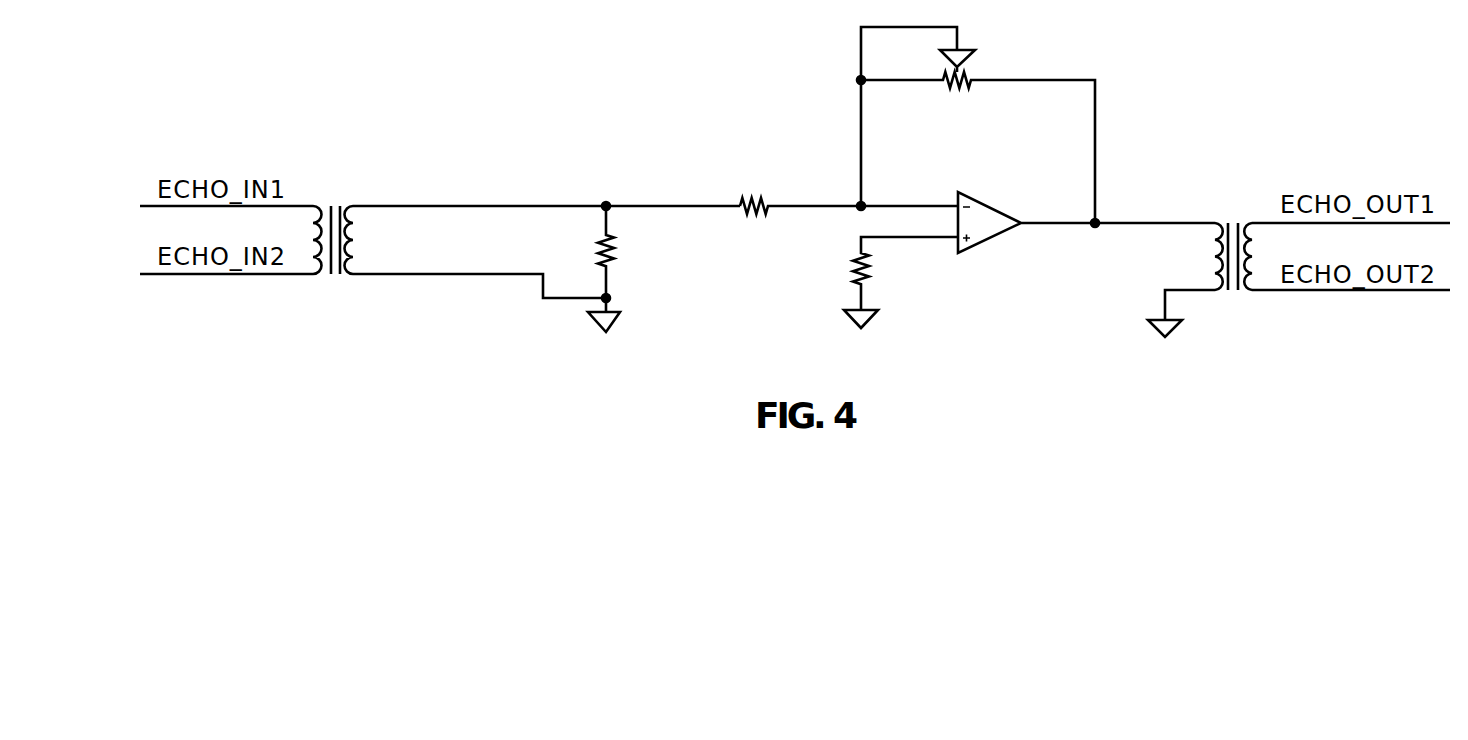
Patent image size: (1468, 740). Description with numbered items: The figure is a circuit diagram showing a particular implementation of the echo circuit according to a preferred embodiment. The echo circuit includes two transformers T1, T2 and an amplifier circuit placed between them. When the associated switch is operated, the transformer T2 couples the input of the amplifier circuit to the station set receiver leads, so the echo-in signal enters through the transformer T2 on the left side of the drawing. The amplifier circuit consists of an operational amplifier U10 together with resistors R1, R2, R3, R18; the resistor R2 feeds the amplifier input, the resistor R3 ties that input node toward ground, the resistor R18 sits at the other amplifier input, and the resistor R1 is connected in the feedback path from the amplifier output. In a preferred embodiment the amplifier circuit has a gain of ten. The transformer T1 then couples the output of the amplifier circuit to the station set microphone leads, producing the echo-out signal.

The transformer T2 is at (422, 240).
The resistor R3 is at (628, 274).
The resistor R2 is at (847, 207).
The resistor R1 is at (976, 125).
The resistor R18 is at (901, 290).
The operational amplifier U10 is at (1086, 224).
The transformer T1 is at (1288, 272).